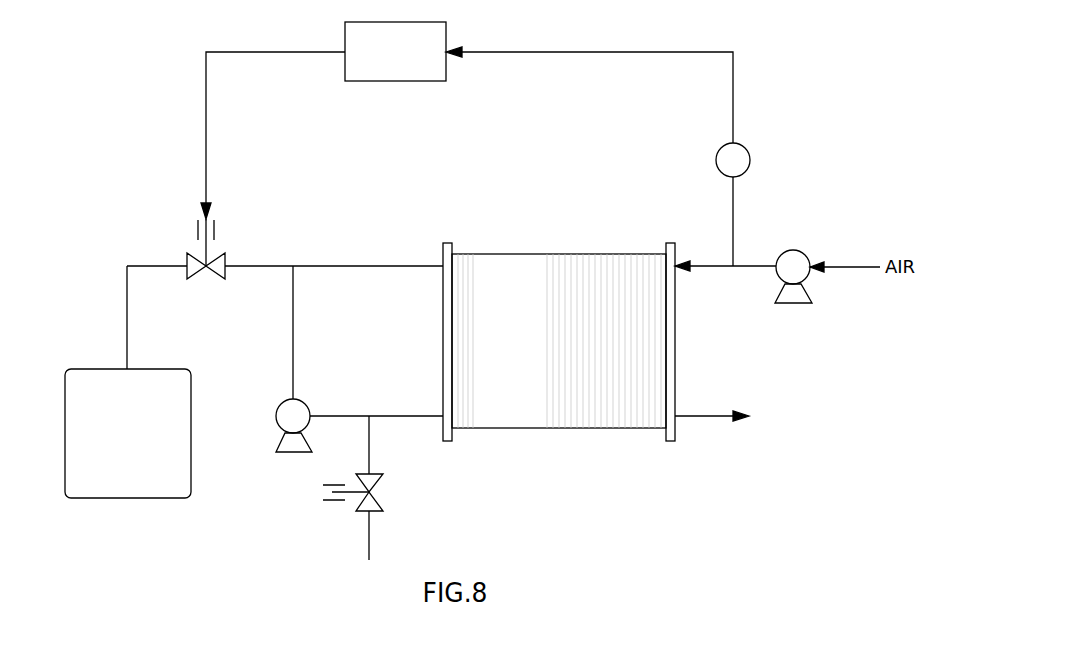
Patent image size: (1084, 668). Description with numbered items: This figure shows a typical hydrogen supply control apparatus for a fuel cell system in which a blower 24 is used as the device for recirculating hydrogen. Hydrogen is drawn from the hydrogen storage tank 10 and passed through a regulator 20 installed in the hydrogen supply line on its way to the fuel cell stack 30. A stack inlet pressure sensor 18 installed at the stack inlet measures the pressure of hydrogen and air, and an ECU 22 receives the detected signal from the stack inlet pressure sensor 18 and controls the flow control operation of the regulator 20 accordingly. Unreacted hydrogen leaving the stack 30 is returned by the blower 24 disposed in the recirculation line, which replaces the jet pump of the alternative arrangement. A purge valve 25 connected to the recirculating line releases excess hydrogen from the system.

The hydrogen storage tank 10 is at (103, 369).
The stack inlet pressure sensor 18 is at (750, 160).
The regulator 20 is at (189, 253).
The ECU 22 is at (395, 82).
The blower 24 is at (308, 401).
The purge valve 25 is at (376, 499).
The fuel cell stack 30 is at (548, 259).